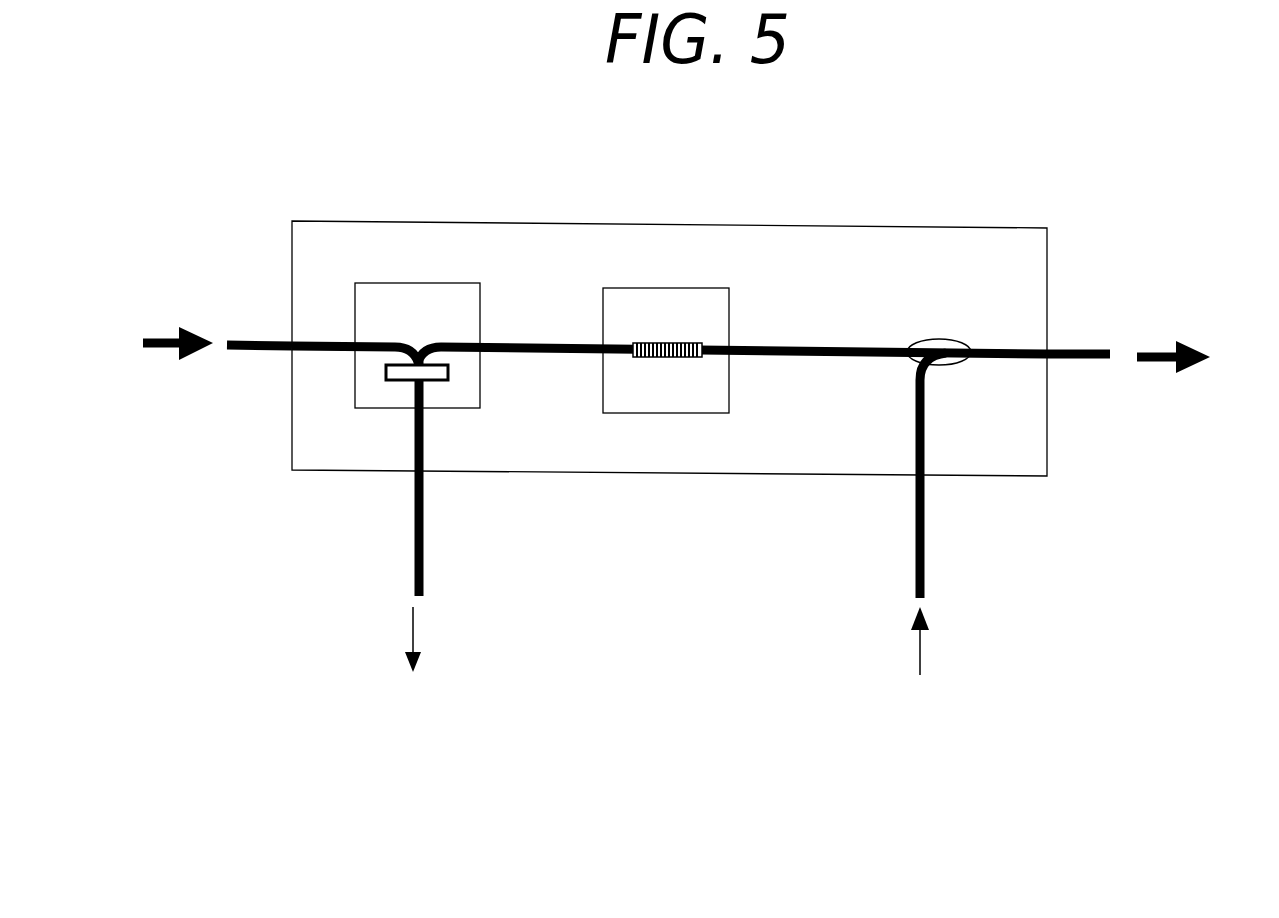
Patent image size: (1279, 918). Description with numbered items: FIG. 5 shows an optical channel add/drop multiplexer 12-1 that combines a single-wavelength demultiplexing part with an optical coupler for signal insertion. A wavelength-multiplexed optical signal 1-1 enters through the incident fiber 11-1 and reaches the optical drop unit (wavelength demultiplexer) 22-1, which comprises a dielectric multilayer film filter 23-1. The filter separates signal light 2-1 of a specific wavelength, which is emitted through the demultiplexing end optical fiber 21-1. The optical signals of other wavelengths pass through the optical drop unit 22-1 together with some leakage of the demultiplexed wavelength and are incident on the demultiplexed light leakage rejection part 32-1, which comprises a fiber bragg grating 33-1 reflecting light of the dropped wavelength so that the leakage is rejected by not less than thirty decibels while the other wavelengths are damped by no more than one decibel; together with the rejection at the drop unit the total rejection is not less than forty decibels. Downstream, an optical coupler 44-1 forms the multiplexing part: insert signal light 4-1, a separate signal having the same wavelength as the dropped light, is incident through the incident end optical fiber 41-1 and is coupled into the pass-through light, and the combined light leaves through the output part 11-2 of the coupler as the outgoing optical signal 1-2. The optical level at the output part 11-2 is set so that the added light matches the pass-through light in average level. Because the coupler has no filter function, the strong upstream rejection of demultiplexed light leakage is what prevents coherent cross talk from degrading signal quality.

The optical signal 1-1 is at (168, 338).
The incident fiber 11-1 is at (245, 350).
The optical channel add/drop multiplexer 12-1 is at (707, 473).
The optical drop unit (wavelength demultiplexer) 22-1 is at (363, 410).
The dielectric multilayer film filter 23-1 is at (430, 358).
The demultiplexing end optical fiber 21-1 is at (415, 513).
The signal light 2-1 is at (412, 620).
The demultiplexed light leakage rejection part 32-1 is at (650, 413).
The fiber bragg grating 33-1 is at (678, 333).
The optical coupler 44-1 is at (968, 342).
The incident end optical fiber 41-1 is at (915, 530).
The insert signal light 4-1 is at (918, 645).
The emitting optical fiber (output part) 11-2 is at (1083, 350).
The output optical signal 1-2 is at (1167, 350).